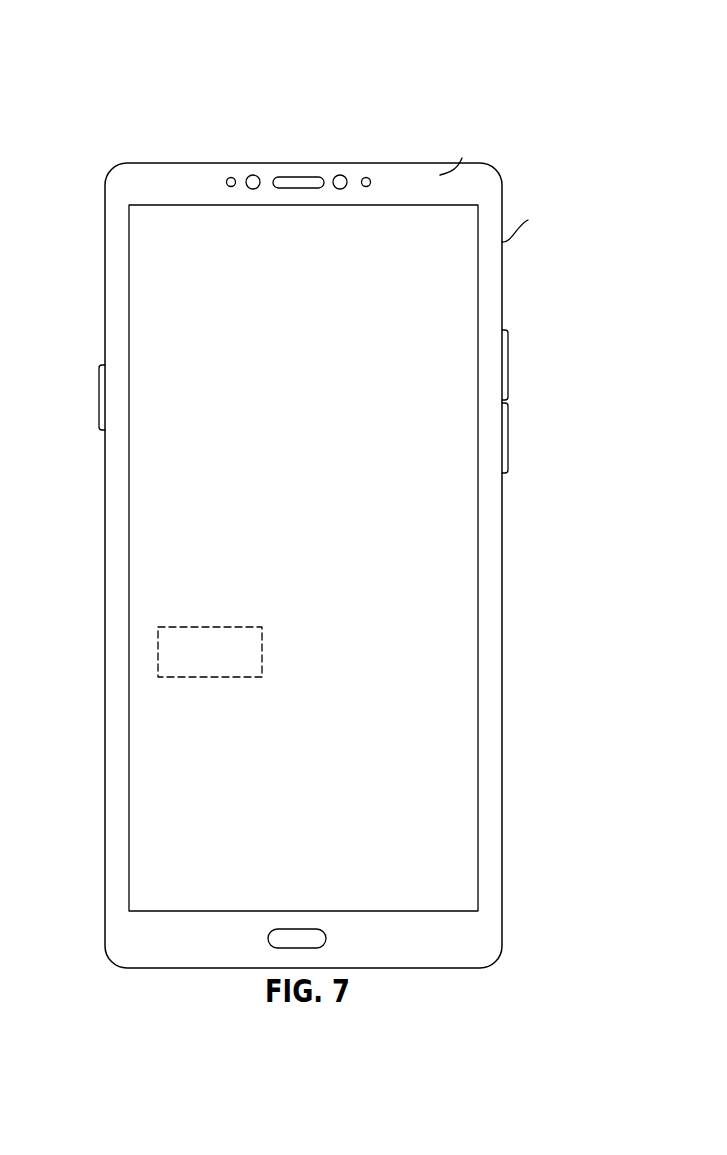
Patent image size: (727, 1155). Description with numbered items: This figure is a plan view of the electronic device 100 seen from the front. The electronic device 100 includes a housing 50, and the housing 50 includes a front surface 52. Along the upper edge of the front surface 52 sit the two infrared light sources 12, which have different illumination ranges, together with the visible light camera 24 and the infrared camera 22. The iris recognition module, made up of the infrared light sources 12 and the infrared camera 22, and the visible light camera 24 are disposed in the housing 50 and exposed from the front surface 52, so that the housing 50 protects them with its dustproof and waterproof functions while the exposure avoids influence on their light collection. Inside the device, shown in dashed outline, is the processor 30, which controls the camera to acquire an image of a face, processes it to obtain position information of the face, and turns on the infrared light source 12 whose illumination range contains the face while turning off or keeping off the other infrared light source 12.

The electronic device 100 is at (318, 62).
The infrared light source 12 is at (232, 177).
The visible light camera 24 is at (256, 181).
The infrared camera 22 is at (341, 181).
The front surface 52 is at (462, 158).
The housing 50 is at (528, 220).
The processor 30 is at (158, 653).